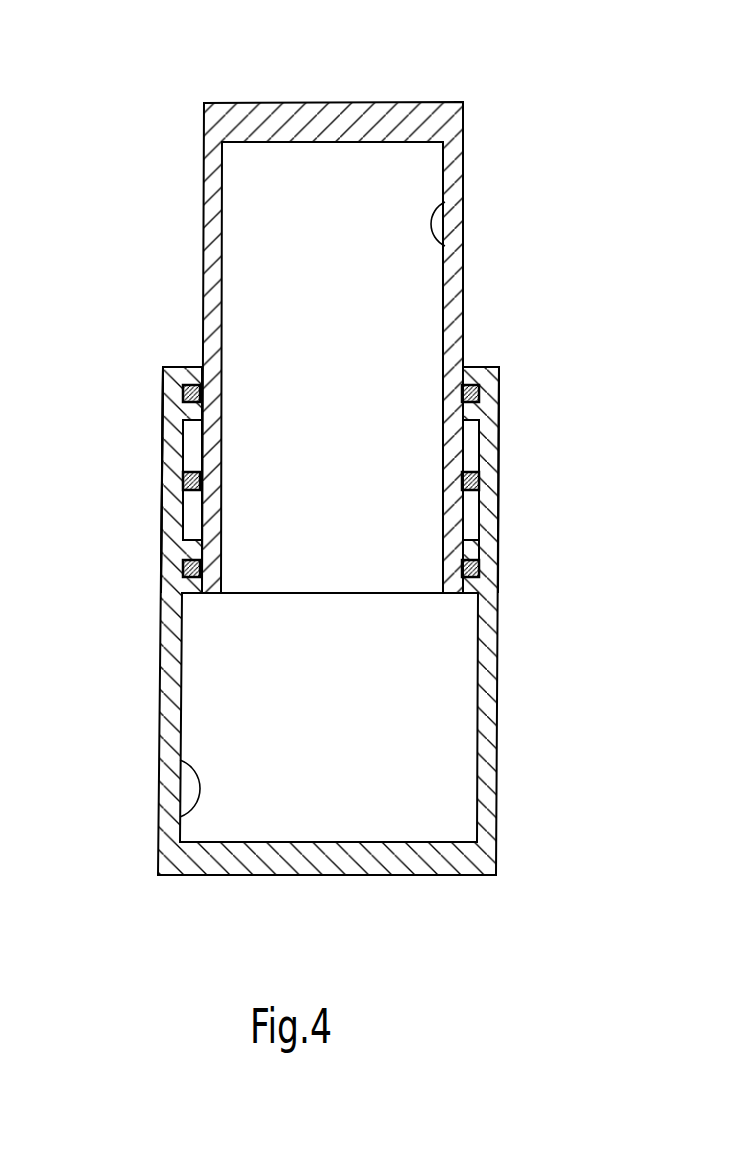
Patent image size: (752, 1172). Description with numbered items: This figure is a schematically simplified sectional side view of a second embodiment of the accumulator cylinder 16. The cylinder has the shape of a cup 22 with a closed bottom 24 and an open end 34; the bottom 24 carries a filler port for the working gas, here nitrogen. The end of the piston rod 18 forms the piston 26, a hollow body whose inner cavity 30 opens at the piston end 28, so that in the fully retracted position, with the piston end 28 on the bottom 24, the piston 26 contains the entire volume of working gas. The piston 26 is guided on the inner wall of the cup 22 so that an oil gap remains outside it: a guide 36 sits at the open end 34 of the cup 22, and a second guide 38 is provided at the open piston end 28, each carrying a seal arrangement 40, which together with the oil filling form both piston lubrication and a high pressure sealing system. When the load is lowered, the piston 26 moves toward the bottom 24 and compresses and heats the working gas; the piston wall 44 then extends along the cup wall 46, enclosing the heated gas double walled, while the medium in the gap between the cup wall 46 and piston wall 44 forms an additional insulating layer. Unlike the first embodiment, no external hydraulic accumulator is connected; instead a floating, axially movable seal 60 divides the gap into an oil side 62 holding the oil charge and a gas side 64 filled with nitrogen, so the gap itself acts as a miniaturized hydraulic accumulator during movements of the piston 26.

The accumulator cylinder 16 is at (495, 232).
The piston rod 18 is at (247, 118).
The cup 22 is at (486, 651).
The bottom 24 is at (397, 860).
The piston 26 is at (449, 444).
The piston end 28 is at (216, 593).
The inner cavity 30 is at (445, 247).
The open end 34 is at (186, 366).
The guide 36 is at (474, 364).
The second guide 38 is at (474, 547).
The seal arrangement 40 is at (191, 564).
The piston wall 44 is at (194, 533).
The cup wall 46 is at (160, 758).
The floating seal 60 is at (193, 482).
The oil side 62 is at (196, 532).
The gas side 64 is at (194, 445).